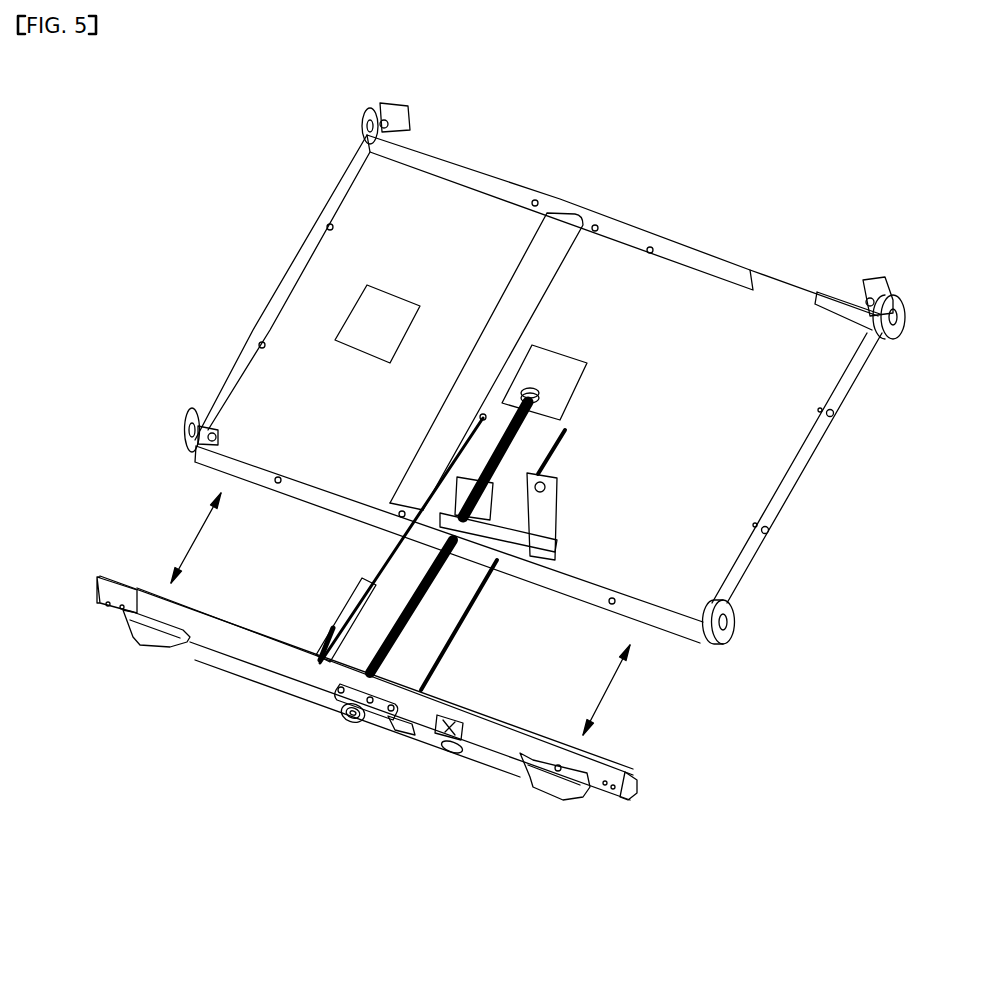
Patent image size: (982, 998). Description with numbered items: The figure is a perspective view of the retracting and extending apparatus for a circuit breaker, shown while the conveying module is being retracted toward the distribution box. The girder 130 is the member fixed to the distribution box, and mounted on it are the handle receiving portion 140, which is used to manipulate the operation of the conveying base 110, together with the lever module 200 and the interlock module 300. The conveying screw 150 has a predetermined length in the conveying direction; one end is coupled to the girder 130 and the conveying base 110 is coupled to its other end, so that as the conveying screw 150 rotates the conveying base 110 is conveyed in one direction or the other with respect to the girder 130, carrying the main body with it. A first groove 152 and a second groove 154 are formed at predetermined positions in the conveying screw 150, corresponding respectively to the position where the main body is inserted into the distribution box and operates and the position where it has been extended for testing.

The conveying base 110 is at (765, 330).
The girder 130 is at (241, 672).
The handle receiving portion 140 is at (349, 722).
The conveying screw 150 is at (422, 603).
The first groove 152 is at (400, 652).
The second groove 154 is at (520, 426).
The lever module 200 is at (415, 739).
The interlock module 300 is at (450, 757).